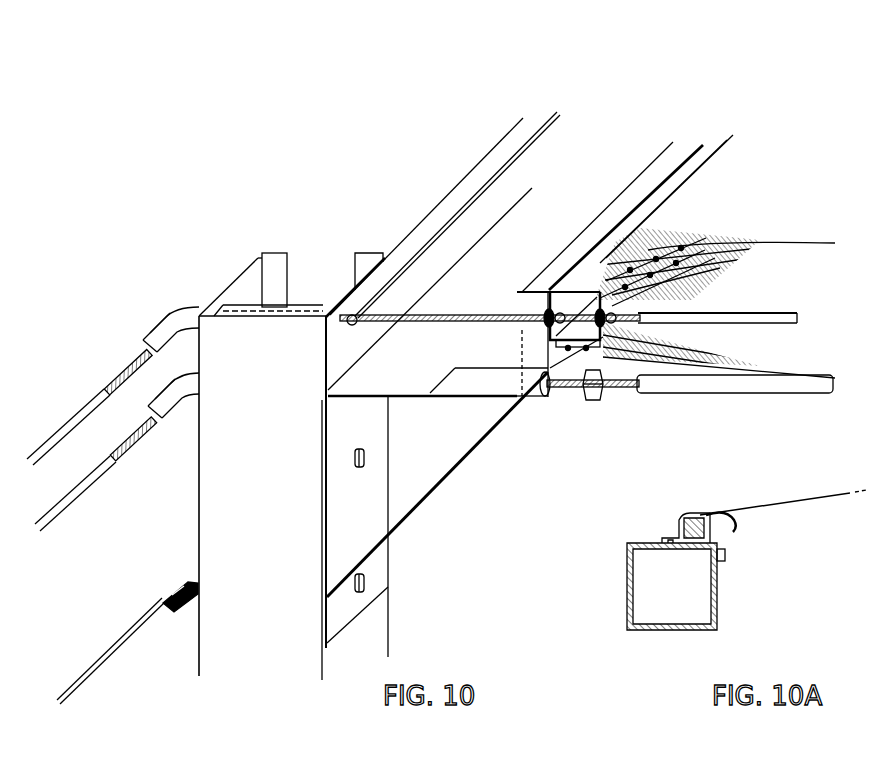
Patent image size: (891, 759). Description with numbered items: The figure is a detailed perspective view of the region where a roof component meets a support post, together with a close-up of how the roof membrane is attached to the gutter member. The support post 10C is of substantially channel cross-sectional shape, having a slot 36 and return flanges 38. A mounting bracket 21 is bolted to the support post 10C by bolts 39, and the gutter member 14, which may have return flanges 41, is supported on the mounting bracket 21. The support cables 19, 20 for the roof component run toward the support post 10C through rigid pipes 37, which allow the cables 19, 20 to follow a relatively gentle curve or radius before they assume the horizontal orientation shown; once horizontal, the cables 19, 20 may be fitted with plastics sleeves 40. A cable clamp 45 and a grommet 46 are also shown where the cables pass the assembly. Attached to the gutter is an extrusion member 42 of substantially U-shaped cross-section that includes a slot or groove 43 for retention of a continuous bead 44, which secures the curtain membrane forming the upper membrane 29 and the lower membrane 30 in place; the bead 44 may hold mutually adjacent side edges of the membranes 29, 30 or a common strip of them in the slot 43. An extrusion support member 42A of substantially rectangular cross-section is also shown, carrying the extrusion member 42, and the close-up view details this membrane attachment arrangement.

In FIG. 10, the support post 10C is at (278, 475).
In FIG. 10, the gutter member 14 is at (578, 198).
In FIG. 10, the support cable 19 is at (113, 447).
In FIG. 10, the support cable 20 is at (98, 380).
In FIG. 10, the mounting bracket 21 is at (443, 486).
In FIG. 10, the upper membrane 29 is at (787, 198).
In FIG. 10A, the upper membrane 29 is at (810, 497).
In FIG. 10, the lower membrane 30 is at (787, 360).
In FIG. 10A, the lower membrane 30 is at (740, 523).
In FIG. 10, the slot 36 is at (322, 300).
In FIG. 10, the rigid pipe 37 is at (155, 323).
In FIG. 10, the return flange 38 is at (271, 252).
In FIG. 10, the bolt 39 is at (366, 455).
In FIG. 10, the plastics sleeve 40 is at (710, 388).
In FIG. 10, the return flange 41 is at (493, 160).
In FIG. 10, the extrusion member 42 is at (590, 280).
In FIG. 10A, the extrusion member 42 is at (680, 524).
In FIG. 10, the extrusion support member 42A is at (546, 350).
In FIG. 10A, the extrusion support member 42A is at (715, 598).
In FIG. 10A, the slot 43 is at (696, 514).
In FIG. 10A, the continuous bead 44 is at (722, 530).
In FIG. 10, the cable clamp 45 is at (586, 400).
In FIG. 10, the grommet 46 is at (544, 312).